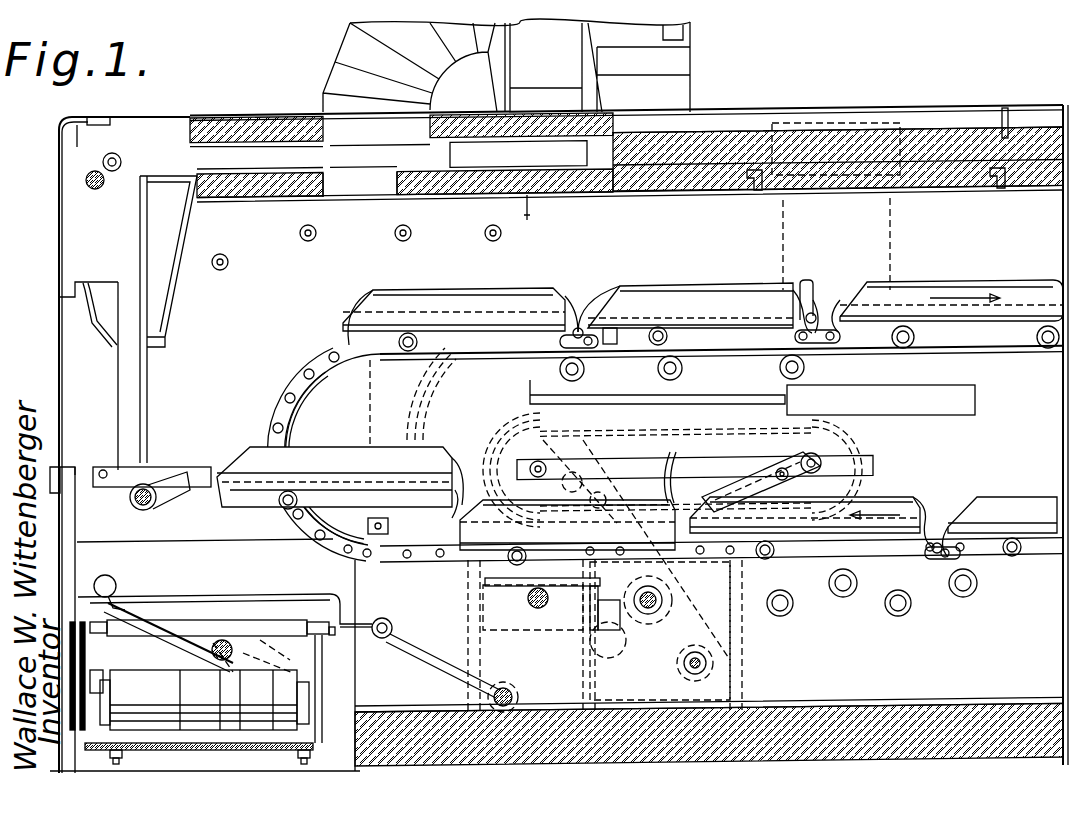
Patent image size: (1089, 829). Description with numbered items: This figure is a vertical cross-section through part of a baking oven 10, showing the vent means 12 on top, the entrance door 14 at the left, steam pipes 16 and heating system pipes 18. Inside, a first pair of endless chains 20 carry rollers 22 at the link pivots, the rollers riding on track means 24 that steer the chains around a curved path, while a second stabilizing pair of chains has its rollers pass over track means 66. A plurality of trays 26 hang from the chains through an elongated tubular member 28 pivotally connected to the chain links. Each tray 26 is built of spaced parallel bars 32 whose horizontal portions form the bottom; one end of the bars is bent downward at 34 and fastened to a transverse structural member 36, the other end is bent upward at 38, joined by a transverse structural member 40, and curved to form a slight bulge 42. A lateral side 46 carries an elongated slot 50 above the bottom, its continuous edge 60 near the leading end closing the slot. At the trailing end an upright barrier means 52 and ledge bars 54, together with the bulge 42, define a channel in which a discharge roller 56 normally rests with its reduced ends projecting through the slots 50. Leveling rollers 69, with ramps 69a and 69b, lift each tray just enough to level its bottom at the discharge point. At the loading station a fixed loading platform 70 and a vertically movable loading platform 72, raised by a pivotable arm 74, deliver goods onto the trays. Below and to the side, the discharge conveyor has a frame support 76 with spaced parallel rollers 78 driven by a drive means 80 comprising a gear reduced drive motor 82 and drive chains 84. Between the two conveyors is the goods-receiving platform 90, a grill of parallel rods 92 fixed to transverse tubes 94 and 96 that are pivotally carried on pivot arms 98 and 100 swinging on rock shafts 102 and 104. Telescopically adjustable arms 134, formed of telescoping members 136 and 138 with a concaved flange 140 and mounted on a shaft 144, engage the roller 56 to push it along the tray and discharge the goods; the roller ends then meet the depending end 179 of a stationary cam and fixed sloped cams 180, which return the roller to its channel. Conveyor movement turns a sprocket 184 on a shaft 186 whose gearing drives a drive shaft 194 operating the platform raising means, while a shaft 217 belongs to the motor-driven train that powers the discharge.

The baking oven 10 is at (55, 160).
The vent means 12 is at (330, 62).
The entrance door 14 is at (138, 400).
The steam pipes 16 is at (395, 228).
The heating system pipes 18 is at (668, 372).
The first pair of spaced endless chains 20 is at (290, 377).
The rollers 22 is at (332, 352).
The track means 24 is at (306, 416).
The trays 26 is at (346, 442).
The elongated tubular member 28 is at (410, 332).
The spaced parallel bars 32 is at (723, 323).
The downward bent end 34 is at (565, 370).
The transverse structural member 36 is at (608, 330).
The upwardly bent end 38 is at (810, 282).
The transverse structural member 40 is at (815, 291).
The bulge 42 is at (813, 308).
The lateral side 46 is at (410, 298).
The elongated slots 50 is at (445, 320).
The upright barrier means 52 is at (842, 298).
The ledge bars 54 is at (570, 337).
The discharge roller 56 is at (567, 298).
The continuous edges 60 is at (344, 324).
The track means 66 is at (437, 405).
The leveling rollers 69 is at (528, 598).
The ramp 69a is at (577, 622).
The ramp 69b is at (485, 582).
The fixed loading platform 70 is at (72, 464).
The movable loading platform 72 is at (152, 465).
The pivotable arm 74 is at (163, 495).
The frame support 76 is at (315, 715).
The rollers 78 is at (245, 620).
The drive means 80 is at (155, 668).
The gear reduced drive motor 82 is at (158, 685).
The drive chains 84 is at (88, 672).
The goods-receiving platform 90 is at (272, 596).
The parallel bars 92 is at (207, 598).
The transverse structural tube 94 is at (113, 582).
The transverse structural tube 96 is at (382, 618).
The pivot arms 98 is at (162, 605).
The pivot arms 100 is at (440, 678).
The rock shaft 102 is at (240, 648).
The rock shaft 104 is at (510, 690).
The arms 134 is at (733, 466).
The telescoping member 136 is at (810, 462).
The telescoping member 138 is at (705, 455).
The enlarged concaved flange 140 is at (668, 475).
The shaft 144 is at (843, 454).
The depending end 179 is at (372, 530).
The fixed sloped cams 180 is at (452, 458).
The sprocket 184 is at (646, 586).
The shaft 186 is at (660, 600).
The drive shaft 194 is at (525, 592).
The shaft 217 is at (700, 663).